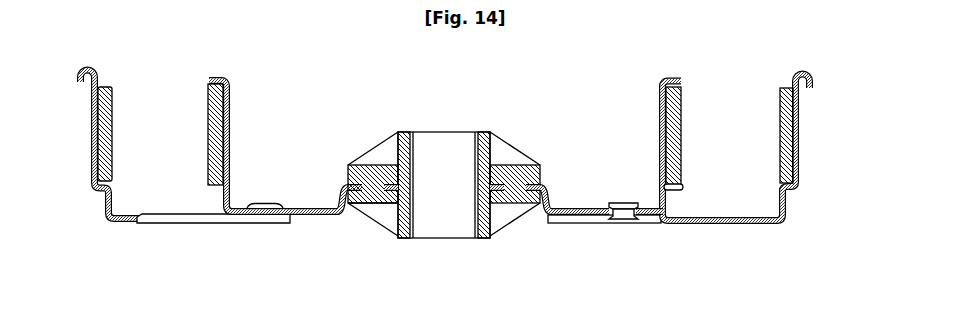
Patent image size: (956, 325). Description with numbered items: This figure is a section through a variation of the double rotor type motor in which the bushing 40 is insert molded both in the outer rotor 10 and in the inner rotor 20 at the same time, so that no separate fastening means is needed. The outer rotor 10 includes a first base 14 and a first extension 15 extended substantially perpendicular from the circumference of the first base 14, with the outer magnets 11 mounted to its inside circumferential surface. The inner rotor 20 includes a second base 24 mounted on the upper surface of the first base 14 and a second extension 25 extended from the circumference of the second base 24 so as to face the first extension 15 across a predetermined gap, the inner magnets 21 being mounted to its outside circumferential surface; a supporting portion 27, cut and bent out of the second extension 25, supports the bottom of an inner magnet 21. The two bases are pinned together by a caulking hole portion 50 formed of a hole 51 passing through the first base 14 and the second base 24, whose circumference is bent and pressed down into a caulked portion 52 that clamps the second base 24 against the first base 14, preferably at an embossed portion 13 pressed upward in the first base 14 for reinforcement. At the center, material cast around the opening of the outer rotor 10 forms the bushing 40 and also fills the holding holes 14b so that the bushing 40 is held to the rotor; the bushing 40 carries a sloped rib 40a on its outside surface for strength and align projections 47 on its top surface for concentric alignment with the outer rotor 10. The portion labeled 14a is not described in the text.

The outer rotor 10 is at (445, 185).
The outer magnets 11 is at (92, 133).
The embossed portion 13 is at (597, 222).
The first base 14 is at (748, 224).
The plate extension 14a is at (181, 218).
The holding holes 14b is at (376, 186).
The first extension 15 is at (803, 138).
The inner rotor 20 is at (659, 123).
The inner magnets 21 is at (230, 157).
The second base 24 is at (646, 217).
The second extension 25 is at (229, 110).
The supporting portion 27 is at (678, 190).
The bushing 40 is at (422, 202).
The rib 40a is at (376, 211).
The align projections 47 is at (400, 236).
The caulking hole portion 50 is at (613, 205).
The hole 51 is at (620, 220).
The caulked portion 52 is at (605, 207).